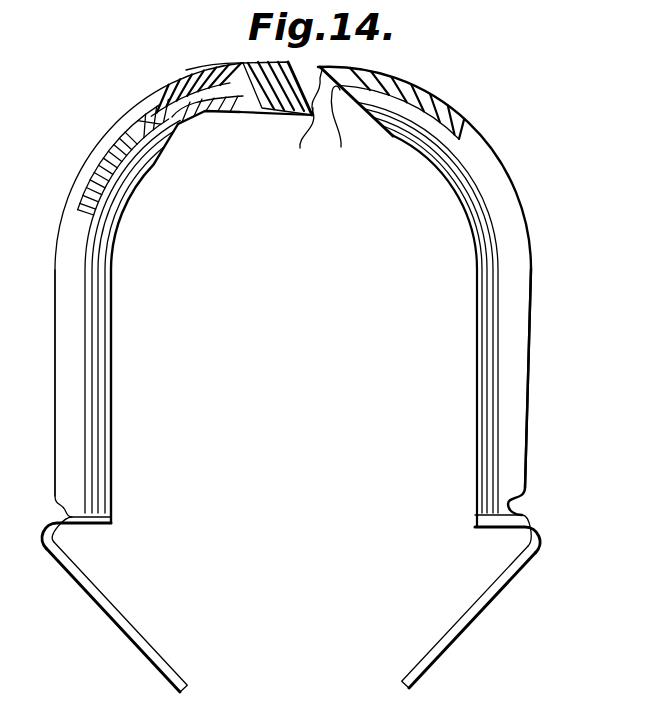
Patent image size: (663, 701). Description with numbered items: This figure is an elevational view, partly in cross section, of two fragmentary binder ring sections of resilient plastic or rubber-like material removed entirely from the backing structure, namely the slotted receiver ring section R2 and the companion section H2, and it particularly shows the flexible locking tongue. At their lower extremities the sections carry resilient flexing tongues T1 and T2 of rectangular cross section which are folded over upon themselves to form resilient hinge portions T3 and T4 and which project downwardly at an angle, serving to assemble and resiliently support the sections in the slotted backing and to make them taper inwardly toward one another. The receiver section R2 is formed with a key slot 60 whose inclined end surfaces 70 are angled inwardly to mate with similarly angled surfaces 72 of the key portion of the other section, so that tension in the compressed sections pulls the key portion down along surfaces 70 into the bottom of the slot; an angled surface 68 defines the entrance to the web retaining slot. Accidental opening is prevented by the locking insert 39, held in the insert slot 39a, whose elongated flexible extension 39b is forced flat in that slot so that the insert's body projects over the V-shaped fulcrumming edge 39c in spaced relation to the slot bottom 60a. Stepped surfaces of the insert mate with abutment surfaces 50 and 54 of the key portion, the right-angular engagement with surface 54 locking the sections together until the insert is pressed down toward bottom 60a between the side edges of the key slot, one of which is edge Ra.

The side edge of key slot Ra is at (228, 62).
The locking insert 39 is at (165, 131).
The insert slot 39a is at (95, 187).
The flexible extension 39b is at (108, 194).
The V-shaped fulcrumming edge 39c is at (137, 164).
The abutment surface 50 is at (306, 120).
The abutment surface 54 is at (346, 127).
The key slot 60 is at (216, 73).
The bottom of key slot 60a is at (218, 118).
The angled surface 68 is at (292, 72).
The inclined end surface 70 is at (258, 113).
The angled surface of key portion 72 is at (367, 74).
The slotted receiver ring section R2 is at (100, 308).
The right leg H2 is at (528, 300).
The resilient flexing tongue T1 is at (133, 632).
The resilient flexing tongue T2 is at (445, 638).
The resilient hinge portion T3 is at (60, 535).
The resilient hinge portion T4 is at (535, 540).